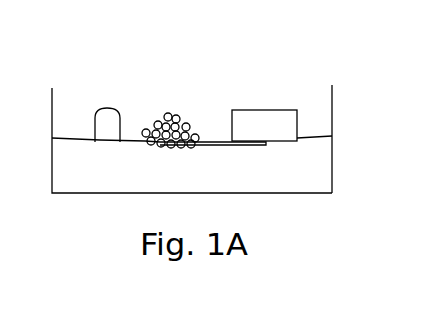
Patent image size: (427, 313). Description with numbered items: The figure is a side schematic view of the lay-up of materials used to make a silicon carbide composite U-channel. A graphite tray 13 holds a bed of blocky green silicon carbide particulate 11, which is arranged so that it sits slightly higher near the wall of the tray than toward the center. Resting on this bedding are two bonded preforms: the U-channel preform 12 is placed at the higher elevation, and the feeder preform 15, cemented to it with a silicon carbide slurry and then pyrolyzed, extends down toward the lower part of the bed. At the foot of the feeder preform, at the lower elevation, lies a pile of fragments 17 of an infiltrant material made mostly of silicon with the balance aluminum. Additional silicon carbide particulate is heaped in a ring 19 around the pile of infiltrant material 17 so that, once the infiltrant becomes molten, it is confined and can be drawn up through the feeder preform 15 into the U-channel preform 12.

The green silicon carbide particulate 11 is at (315, 178).
The U-channel preform 12 is at (266, 122).
The graphite tray 13 is at (333, 94).
The feeder preform 15 is at (248, 147).
The fragments of infiltrant material 17 is at (170, 117).
The ring 19 is at (108, 119).